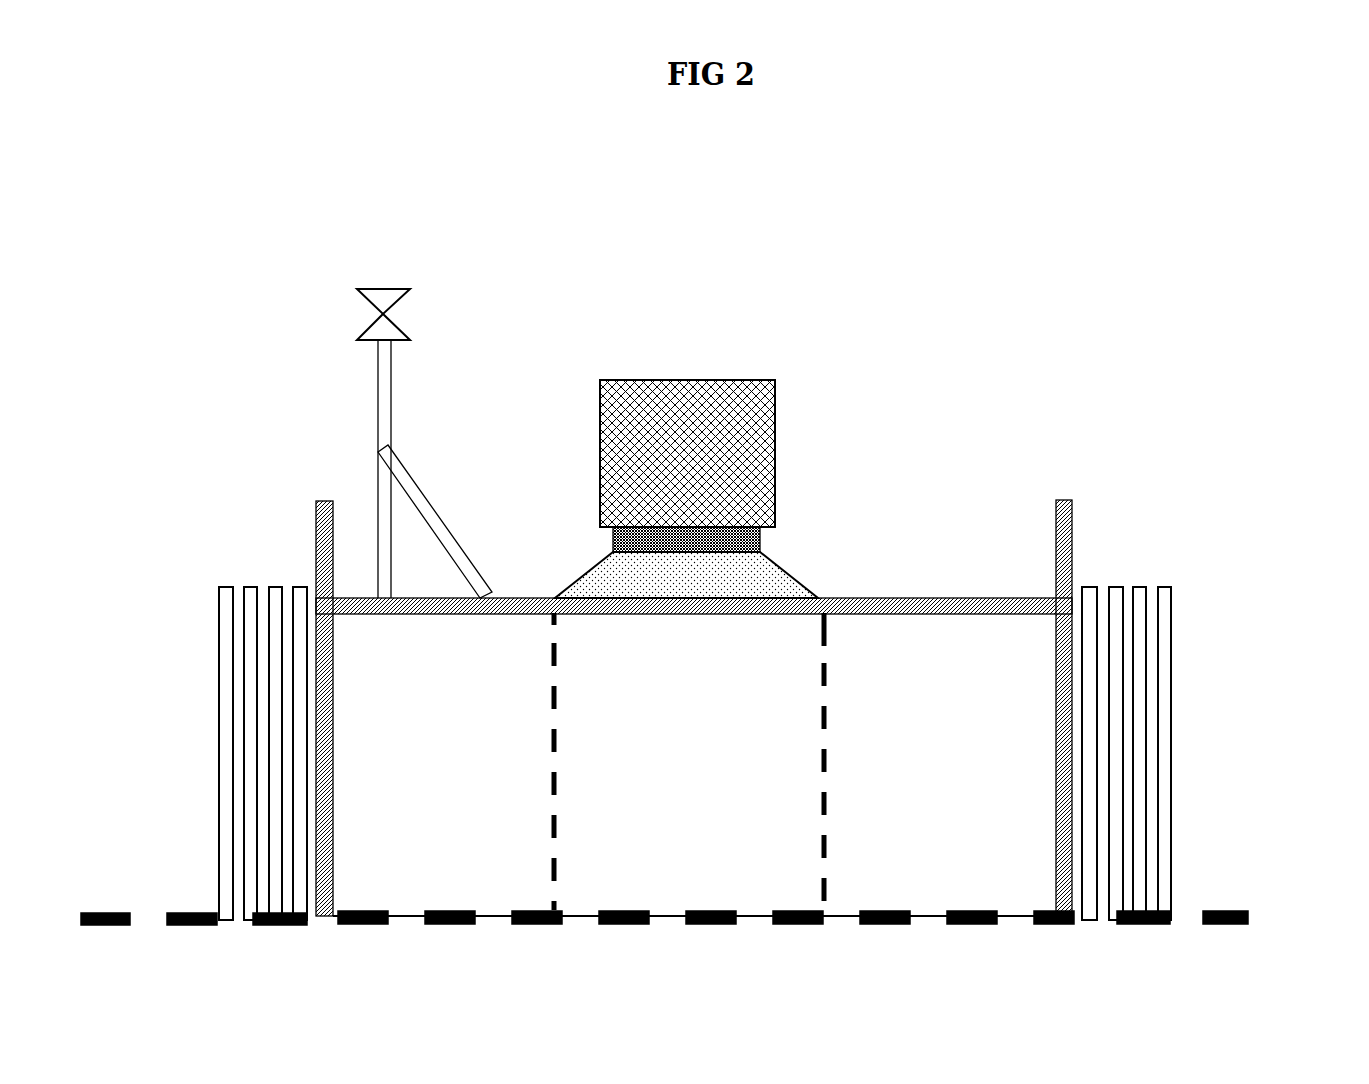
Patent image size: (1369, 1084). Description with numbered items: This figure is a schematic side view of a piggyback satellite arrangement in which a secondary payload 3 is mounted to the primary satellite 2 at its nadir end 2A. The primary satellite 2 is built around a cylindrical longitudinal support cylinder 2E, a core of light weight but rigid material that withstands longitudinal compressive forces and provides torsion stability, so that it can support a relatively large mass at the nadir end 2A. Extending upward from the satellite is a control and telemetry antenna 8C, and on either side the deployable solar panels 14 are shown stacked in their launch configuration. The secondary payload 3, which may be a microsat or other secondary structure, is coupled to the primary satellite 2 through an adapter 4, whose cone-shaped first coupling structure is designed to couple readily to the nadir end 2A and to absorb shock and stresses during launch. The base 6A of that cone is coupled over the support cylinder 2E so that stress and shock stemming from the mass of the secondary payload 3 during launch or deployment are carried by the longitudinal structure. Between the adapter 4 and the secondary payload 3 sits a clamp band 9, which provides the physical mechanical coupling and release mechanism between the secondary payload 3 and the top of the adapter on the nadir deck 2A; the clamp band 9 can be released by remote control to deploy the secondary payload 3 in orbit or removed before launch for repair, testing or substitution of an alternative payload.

The primary satellite 2 is at (957, 677).
The nadir end 2A is at (933, 587).
The support cylinder 2E is at (830, 752).
The secondary payload 3 is at (727, 447).
The adapter 4 is at (548, 520).
The base of the cone 6A is at (792, 572).
The telemetry antenna 8C is at (412, 308).
The clamp band 9 is at (775, 530).
The deployable solar panels 14 is at (1133, 657).